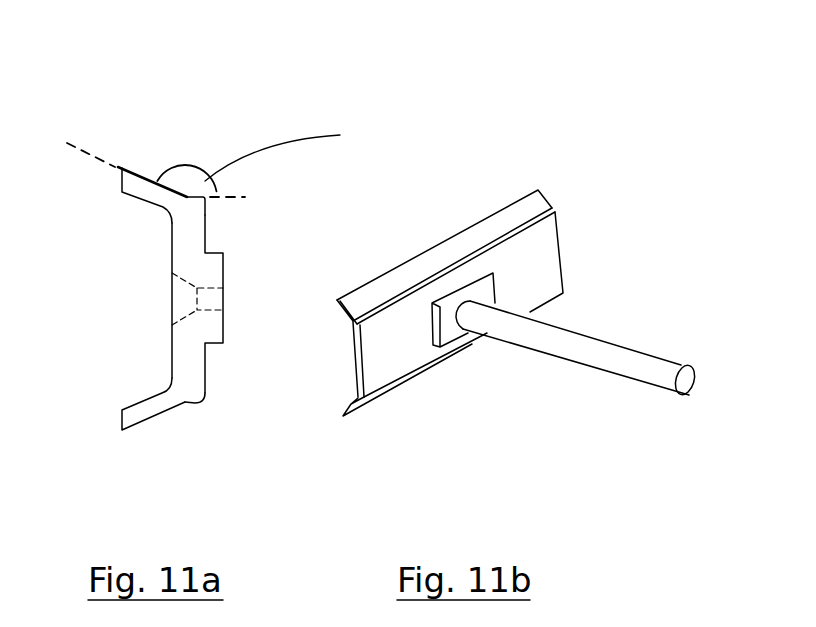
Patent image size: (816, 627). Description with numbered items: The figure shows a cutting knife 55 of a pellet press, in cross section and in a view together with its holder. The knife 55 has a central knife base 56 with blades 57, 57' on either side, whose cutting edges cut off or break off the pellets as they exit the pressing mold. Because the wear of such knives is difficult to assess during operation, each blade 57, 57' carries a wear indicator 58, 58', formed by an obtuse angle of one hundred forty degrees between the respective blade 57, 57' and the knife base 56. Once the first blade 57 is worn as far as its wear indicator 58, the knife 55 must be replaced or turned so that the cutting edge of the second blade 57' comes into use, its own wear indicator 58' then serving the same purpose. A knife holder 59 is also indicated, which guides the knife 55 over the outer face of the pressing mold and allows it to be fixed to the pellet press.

In FIG. 11A, the cutting knife 55 is at (114, 123).
In FIG. 11B, the cutting knife 55 is at (527, 282).
In FIG. 11A, the knife base 56 is at (190, 237).
In FIG. 11B, the knife base 56 is at (540, 242).
In FIG. 11A, the first blade 57 is at (112, 222).
In FIG. 11B, the first blade 57 is at (482, 214).
In FIG. 11A, the second blade 57' is at (105, 384).
In FIG. 11A, the wear indicator 58 is at (227, 148).
In FIG. 11B, the wear indicator 58 is at (516, 237).
In FIG. 11A, the wear indicator 58' is at (210, 430).
In FIG. 11B, the knife holder 59 is at (628, 357).